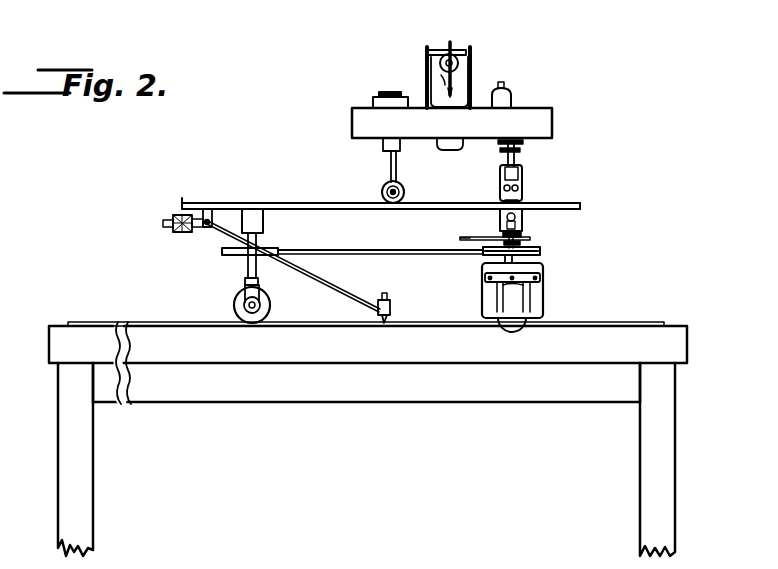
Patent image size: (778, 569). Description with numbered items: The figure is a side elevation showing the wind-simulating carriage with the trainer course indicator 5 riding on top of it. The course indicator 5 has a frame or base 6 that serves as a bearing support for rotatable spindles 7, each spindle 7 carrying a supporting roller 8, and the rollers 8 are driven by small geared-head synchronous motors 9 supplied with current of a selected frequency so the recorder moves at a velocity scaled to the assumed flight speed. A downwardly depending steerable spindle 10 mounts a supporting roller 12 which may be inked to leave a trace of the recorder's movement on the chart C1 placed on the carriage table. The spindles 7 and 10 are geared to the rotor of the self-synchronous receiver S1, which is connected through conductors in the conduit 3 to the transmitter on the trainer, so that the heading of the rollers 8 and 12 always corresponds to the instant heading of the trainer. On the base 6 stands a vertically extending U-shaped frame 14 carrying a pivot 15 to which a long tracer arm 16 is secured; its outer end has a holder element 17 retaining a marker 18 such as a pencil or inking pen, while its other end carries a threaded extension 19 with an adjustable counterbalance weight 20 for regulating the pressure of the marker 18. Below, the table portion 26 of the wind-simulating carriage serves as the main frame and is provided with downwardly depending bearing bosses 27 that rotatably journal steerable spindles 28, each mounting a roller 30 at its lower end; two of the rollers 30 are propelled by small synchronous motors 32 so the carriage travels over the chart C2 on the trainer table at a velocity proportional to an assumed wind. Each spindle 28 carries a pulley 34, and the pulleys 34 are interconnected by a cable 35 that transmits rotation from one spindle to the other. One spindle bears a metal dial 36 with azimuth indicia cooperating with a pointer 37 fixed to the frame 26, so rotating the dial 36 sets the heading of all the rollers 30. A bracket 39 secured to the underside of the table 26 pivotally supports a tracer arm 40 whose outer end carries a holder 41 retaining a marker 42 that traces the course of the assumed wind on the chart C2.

The conduit 3 is at (503, 81).
The course indicator 5 is at (565, 129).
The frame or base 6 is at (533, 117).
The rotatable spindle 7 is at (520, 152).
The supporting roller 8 is at (523, 198).
The synchronous motor 9 is at (524, 180).
The steerable spindle 10 is at (397, 171).
The supporting roller 12 is at (404, 193).
The U-shaped frame 14 is at (458, 62).
The pivot 15 is at (473, 50).
The tracer arm 16 is at (451, 44).
The holder element 17 is at (431, 79).
The marker 18 is at (456, 83).
The threaded extension 19 is at (430, 68).
The counterbalance weight 20 is at (429, 52).
The table portion 26 is at (580, 210).
The bearing boss 27 is at (264, 215).
The steerable spindle 28 is at (258, 273).
The roller 30 is at (271, 309).
The synchronous motor 32 is at (537, 296).
The pulley 34 is at (276, 251).
The cable 35 is at (383, 253).
The metal dial 36 is at (477, 238).
The pointer 37 is at (520, 230).
The bracket 39 is at (205, 227).
The tracer arm 40 is at (340, 290).
The holder 41 is at (390, 306).
The marker 42 is at (388, 319).
The self-synchronous receiver S1 is at (449, 154).
The chart C1 is at (567, 202).
The chart C2 is at (616, 322).